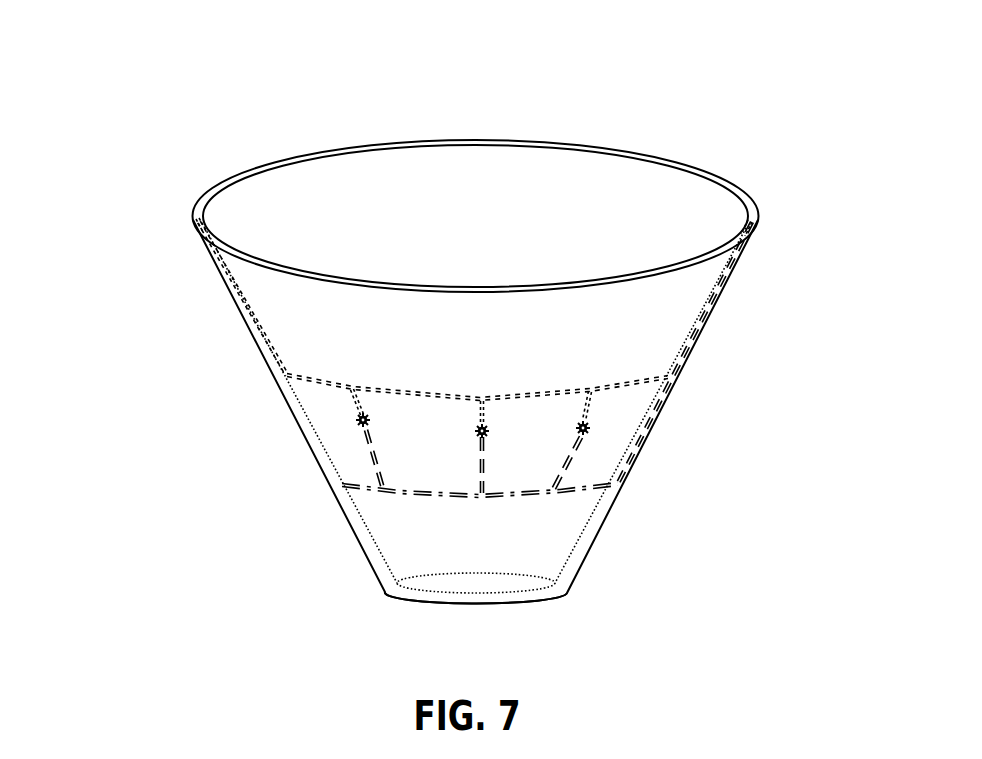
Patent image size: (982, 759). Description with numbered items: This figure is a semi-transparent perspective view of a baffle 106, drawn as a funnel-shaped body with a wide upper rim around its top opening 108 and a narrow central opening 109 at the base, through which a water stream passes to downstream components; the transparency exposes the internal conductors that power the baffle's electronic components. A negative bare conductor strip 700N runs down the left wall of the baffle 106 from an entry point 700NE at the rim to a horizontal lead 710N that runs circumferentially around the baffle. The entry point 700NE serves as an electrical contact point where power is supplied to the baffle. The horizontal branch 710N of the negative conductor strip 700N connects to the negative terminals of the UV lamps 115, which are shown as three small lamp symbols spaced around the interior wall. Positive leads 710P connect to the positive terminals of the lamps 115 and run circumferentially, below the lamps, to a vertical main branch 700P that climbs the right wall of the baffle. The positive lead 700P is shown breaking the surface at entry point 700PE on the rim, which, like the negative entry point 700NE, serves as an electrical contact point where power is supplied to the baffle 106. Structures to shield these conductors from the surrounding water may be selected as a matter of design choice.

The baffle 106 is at (128, 123).
The opening 108 is at (383, 172).
The central opening 109 is at (447, 614).
The UV lamps 115 is at (360, 418).
The negative bare conductor strip 700N is at (242, 316).
The entry point 700NE is at (195, 217).
The vertical main branch 700P is at (716, 302).
The entry point 700PE is at (755, 221).
The horizontal lead 710N is at (473, 405).
The positive leads 710P is at (575, 443).